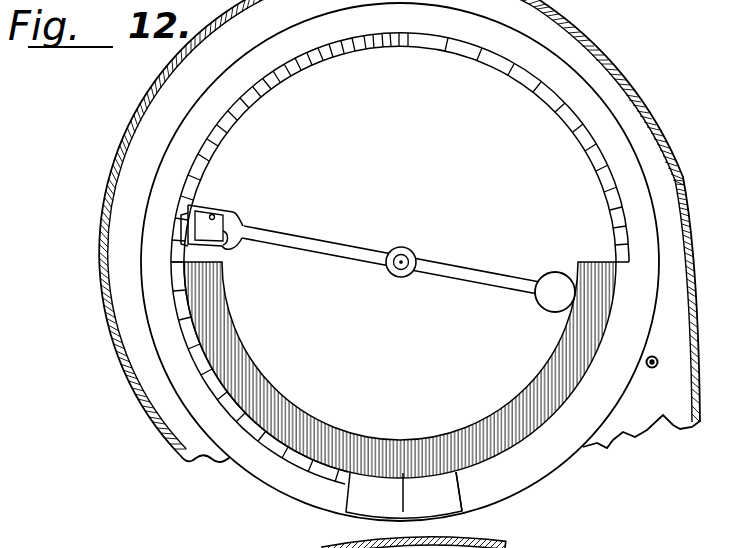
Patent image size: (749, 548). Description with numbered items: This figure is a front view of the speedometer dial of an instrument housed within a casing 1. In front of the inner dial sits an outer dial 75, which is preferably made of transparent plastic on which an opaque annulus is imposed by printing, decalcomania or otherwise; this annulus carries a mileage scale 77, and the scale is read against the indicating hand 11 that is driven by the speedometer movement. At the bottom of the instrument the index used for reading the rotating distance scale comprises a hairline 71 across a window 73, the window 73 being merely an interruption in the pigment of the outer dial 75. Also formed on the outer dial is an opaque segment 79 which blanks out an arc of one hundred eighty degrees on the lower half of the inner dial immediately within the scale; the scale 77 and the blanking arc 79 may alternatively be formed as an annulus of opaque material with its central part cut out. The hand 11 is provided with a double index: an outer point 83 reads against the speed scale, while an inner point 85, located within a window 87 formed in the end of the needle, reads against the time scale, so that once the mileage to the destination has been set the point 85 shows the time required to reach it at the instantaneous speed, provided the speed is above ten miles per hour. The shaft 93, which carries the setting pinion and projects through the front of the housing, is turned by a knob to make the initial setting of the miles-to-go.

The casing 1 is at (700, 293).
The indicating hand 11 is at (338, 247).
The hairline 71 is at (404, 498).
The window 73 is at (455, 489).
The outer dial 75 is at (645, 307).
The mileage scale 77 is at (187, 333).
The opaque segment 79 is at (399, 443).
The outer point 83 is at (181, 222).
The inner point 85 is at (227, 250).
The window 87 is at (212, 215).
The shaft 93 is at (655, 357).